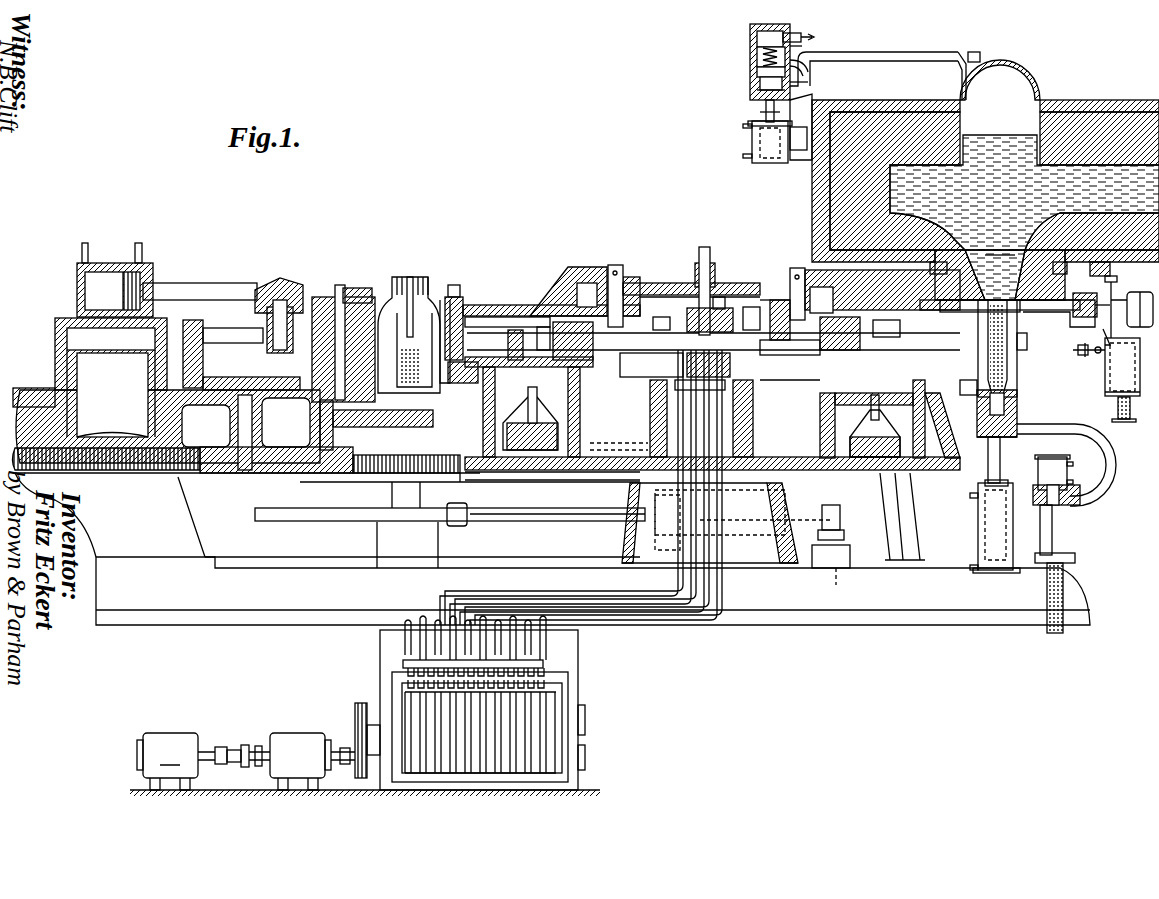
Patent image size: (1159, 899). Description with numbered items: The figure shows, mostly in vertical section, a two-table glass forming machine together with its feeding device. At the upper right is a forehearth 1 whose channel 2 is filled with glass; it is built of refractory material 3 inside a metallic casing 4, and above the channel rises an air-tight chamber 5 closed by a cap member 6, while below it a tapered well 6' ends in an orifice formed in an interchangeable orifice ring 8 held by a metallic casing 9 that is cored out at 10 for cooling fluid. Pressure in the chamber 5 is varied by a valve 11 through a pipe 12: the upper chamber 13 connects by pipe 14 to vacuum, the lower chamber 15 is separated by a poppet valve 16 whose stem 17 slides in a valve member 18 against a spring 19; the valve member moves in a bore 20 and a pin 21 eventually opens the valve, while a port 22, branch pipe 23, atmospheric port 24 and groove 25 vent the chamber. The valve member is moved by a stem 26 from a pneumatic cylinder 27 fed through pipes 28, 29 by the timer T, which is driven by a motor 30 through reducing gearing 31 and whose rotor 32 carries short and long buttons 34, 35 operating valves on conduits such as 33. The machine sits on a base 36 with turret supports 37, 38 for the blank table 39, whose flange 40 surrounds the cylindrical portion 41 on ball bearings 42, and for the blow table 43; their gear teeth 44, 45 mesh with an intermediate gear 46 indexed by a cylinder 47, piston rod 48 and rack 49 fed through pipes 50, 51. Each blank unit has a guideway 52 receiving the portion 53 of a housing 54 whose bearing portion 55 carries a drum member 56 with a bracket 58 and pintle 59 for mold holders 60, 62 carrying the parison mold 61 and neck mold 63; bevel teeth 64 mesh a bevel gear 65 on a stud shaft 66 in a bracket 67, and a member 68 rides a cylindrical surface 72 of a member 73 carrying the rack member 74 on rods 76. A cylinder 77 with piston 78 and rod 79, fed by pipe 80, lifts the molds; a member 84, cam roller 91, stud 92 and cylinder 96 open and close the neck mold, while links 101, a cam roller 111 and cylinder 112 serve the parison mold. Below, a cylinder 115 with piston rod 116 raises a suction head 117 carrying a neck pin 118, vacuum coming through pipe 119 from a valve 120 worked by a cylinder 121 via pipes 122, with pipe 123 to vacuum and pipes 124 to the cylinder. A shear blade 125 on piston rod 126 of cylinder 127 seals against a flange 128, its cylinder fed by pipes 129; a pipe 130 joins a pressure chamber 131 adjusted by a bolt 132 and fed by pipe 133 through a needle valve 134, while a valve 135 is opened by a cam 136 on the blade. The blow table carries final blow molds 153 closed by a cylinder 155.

The forehearth 1 is at (802, 193).
The channel 2 is at (812, 177).
The refractory material 3 is at (1095, 112).
The metallic casing 4 is at (905, 100).
The chamber 5 is at (1010, 85).
The cap member 6 is at (986, 46).
The tapered well 6' is at (1002, 196).
The orifice ring 8 is at (935, 271).
The metallic casing 9 is at (948, 262).
The hollow 10 is at (1050, 305).
The valve 11 is at (739, 48).
The pipe 12 is at (872, 62).
The upper chamber 13 is at (755, 30).
The pipe 14 is at (797, 36).
The chamber 15 is at (756, 52).
The poppet type valve 16 is at (802, 45).
The valve stem 17 is at (800, 70).
The valve member 18 is at (760, 90).
The compression spring 19 is at (760, 62).
The bore 20 is at (765, 104).
The pin 21 is at (755, 72).
The port 22 is at (797, 127).
The branch pipe 23 is at (806, 60).
The port 24 is at (770, 80).
The circumferential groove 25 is at (796, 84).
The valve stem 26 is at (768, 112).
The pneumatic cylinder 27 is at (768, 157).
The pipe 28 is at (743, 126).
The pipe 29 is at (743, 156).
The motor 30 is at (175, 735).
The reducing gearing 31 is at (283, 740).
The rotor 32 is at (556, 746).
The conduit 33 is at (403, 628).
The short button 34 is at (500, 693).
The long button 35 is at (440, 692).
The base 36 is at (852, 606).
The turret support 37 is at (790, 505).
The turret support 38 is at (178, 518).
The blank table 39 is at (898, 475).
The internal flange 40 is at (750, 405).
The upstanding cylindrical portion 41 is at (748, 401).
The ball bearings 42 is at (710, 523).
The blow table 43 is at (184, 428).
The gear teeth 44 is at (948, 463).
The gear teeth 45 is at (142, 473).
The intermediate gear 46 is at (385, 455).
The pneumatic cylinder 47 is at (844, 540).
The piston rod 48 is at (562, 518).
The rack member 49 is at (326, 508).
The pipe 50 is at (660, 565).
The pipe 51 is at (815, 582).
The guideway structure 52 is at (580, 395).
The downwardly extending portion 53 is at (822, 421).
The housing 54 is at (805, 385).
The bearing portion 55 is at (935, 292).
The drum member 56 is at (868, 300).
The bracket 58 is at (470, 385).
The pintle 59 is at (455, 297).
The mold holders 60 is at (1018, 350).
The parison mold 61 is at (1010, 365).
The mold holders 62 is at (972, 393).
The neck mold 63 is at (405, 277).
The bevel gear teeth 64 is at (800, 405).
The bevel gear 65 is at (780, 300).
The stud shaft 66 is at (614, 265).
The bracket 67 is at (550, 290).
The member 68 is at (770, 308).
The cylindrical surface 72 is at (641, 283).
The member 73 is at (665, 283).
The member 74 is at (740, 288).
The rods 76 is at (702, 250).
The pneumatic cylinder 77 is at (918, 475).
The piston 78 is at (886, 476).
The rod 79 is at (868, 412).
The pipe 80 is at (760, 450).
The member 84 is at (480, 305).
The cam roller 91 is at (650, 370).
The stud 92 is at (751, 336).
The pneumatic cylinder 96 is at (730, 365).
The links 101 is at (482, 333).
The cam roller 111 is at (663, 312).
The pneumatic cylinder 112 is at (690, 306).
The pneumatic cylinder 115 is at (978, 540).
The piston rod 116 is at (1000, 455).
The suction applying head 117 is at (1018, 411).
The neck pin 118 is at (977, 431).
The pipe 119 is at (1110, 432).
The valve 120 is at (1052, 531).
The pneumatic cylinder 121 is at (1052, 457).
The pipes 122 is at (1073, 482).
The pipe 123 is at (1075, 557).
The pipes 124 is at (970, 495).
The shear blade 125 is at (1027, 340).
The piston rod 126 is at (1092, 322).
The pneumatic cylinder 127 is at (1118, 320).
The flange 128 is at (1110, 270).
The pipes 129 is at (1122, 367).
The pipe 130 is at (1132, 304).
The pressure chamber 131 is at (1105, 393).
The threaded bolt 132 is at (1130, 408).
The pipe 133 is at (1096, 356).
The valve 134 is at (1078, 353).
The valve 135 is at (1117, 280).
The cam 136 is at (1075, 308).
The final blow molds 153 is at (385, 315).
The cylinder 155 is at (105, 263).
The timer T is at (585, 682).